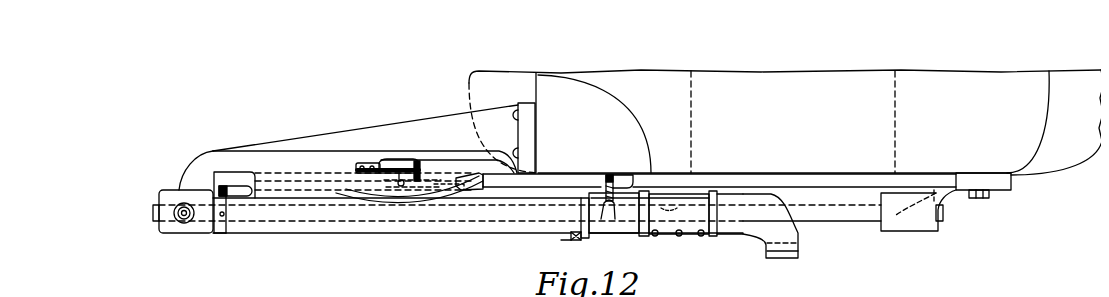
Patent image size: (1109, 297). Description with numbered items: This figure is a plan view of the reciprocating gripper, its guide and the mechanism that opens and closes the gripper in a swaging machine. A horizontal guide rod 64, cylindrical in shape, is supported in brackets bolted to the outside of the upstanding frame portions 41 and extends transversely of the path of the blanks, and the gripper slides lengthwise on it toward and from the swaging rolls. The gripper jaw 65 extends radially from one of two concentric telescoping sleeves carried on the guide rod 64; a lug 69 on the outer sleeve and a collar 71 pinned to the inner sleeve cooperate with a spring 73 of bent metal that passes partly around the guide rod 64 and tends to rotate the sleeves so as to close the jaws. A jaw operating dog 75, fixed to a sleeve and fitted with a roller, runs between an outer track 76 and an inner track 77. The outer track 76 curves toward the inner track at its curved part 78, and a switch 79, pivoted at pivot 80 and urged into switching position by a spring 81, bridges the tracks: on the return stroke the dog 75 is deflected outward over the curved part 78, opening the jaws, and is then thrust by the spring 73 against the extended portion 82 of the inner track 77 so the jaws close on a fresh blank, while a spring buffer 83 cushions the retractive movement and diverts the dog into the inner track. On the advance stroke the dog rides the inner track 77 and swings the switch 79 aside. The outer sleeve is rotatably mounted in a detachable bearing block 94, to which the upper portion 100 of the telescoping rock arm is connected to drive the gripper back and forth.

The frame 41 is at (785, 134).
The horizontal guide rod 64 is at (284, 210).
The gripper jaw 65 is at (781, 250).
The lug 69 is at (570, 233).
The collar 71 is at (578, 206).
The spring 73 is at (584, 236).
The jaw operating dog 75 is at (608, 172).
The outer track 76 is at (345, 196).
The inner track 77 is at (316, 184).
The curved part of outer track 78 is at (448, 188).
The switch 79 is at (464, 176).
The pivot 80 is at (398, 165).
The spring 81 is at (417, 162).
The extended portion of inner track 82 is at (240, 180).
The spring buffer 83 is at (240, 194).
The detachable bearing block 94 is at (679, 233).
The upper portion of rock arm 100 is at (706, 233).